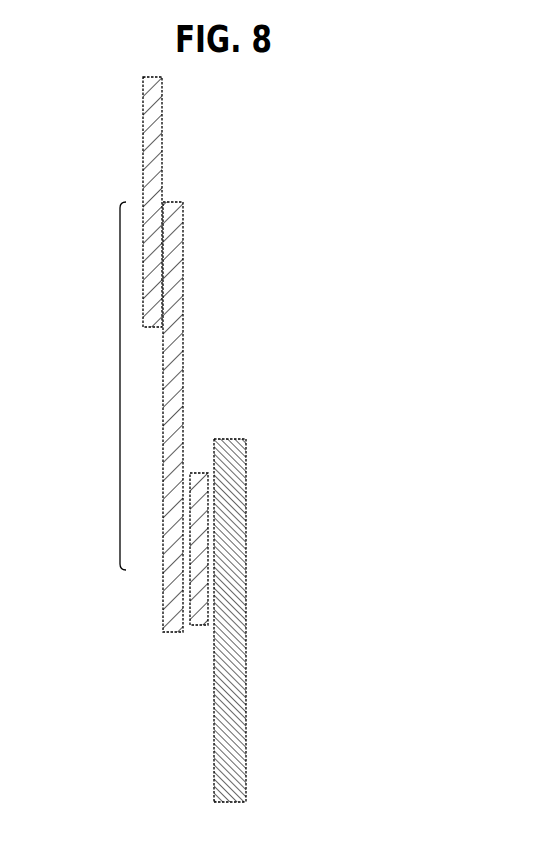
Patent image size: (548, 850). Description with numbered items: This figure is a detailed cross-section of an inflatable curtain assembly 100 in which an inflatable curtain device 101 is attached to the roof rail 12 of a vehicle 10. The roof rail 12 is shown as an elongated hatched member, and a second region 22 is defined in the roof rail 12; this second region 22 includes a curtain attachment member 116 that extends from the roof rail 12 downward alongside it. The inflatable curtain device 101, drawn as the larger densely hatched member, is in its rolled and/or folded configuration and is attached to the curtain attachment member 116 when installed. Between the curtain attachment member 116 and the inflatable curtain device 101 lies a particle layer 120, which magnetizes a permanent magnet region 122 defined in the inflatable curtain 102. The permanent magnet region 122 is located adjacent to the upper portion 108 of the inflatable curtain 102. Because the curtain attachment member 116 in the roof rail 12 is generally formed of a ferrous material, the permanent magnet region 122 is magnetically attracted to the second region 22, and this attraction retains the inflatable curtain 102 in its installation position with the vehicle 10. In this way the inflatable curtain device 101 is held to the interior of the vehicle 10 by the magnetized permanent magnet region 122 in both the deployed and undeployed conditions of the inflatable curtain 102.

The inflatable curtain assembly 100 is at (303, 201).
The vehicle 10 is at (152, 202).
The roof rail 12 is at (143, 121).
The second region 22 is at (119, 384).
The curtain attachment member 116 is at (184, 324).
The particle layer 120 is at (205, 598).
The inflatable curtain device 101 is at (245, 465).
The inflatable curtain 102 is at (232, 525).
The upper portion 108 is at (248, 582).
The permanent magnet region 122 is at (215, 605).